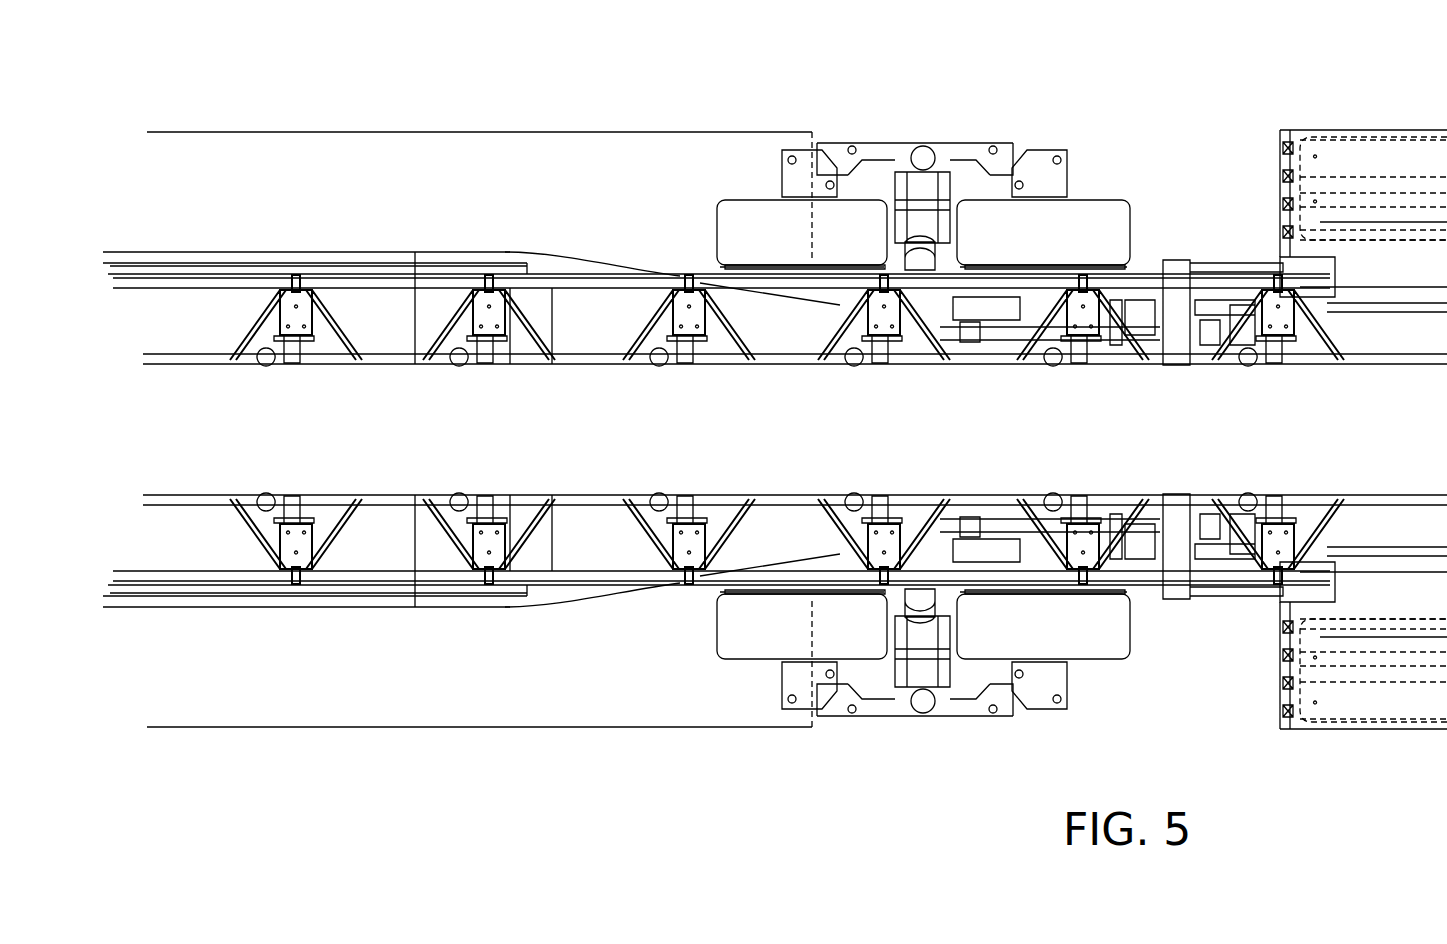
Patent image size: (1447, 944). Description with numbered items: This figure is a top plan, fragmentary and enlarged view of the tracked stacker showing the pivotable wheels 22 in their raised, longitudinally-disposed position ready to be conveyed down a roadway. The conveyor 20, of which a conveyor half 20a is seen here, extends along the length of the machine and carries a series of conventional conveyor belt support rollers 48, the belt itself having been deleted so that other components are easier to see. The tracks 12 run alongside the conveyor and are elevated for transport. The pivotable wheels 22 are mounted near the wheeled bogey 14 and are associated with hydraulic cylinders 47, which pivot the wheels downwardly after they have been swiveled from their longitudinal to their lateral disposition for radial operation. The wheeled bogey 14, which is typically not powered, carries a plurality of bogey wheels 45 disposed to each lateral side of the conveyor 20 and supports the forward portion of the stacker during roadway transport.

The tracks 12 is at (583, 134).
The wheeled bogey 14 is at (1262, 193).
The conveyor 20 is at (338, 272).
The conveyor half 20a is at (603, 278).
The pivotable wheels 22 is at (765, 215).
The bogey wheels 45 is at (1355, 200).
The hydraulic cylinders 47 is at (930, 256).
The conveyor belt support rollers 48 is at (270, 347).